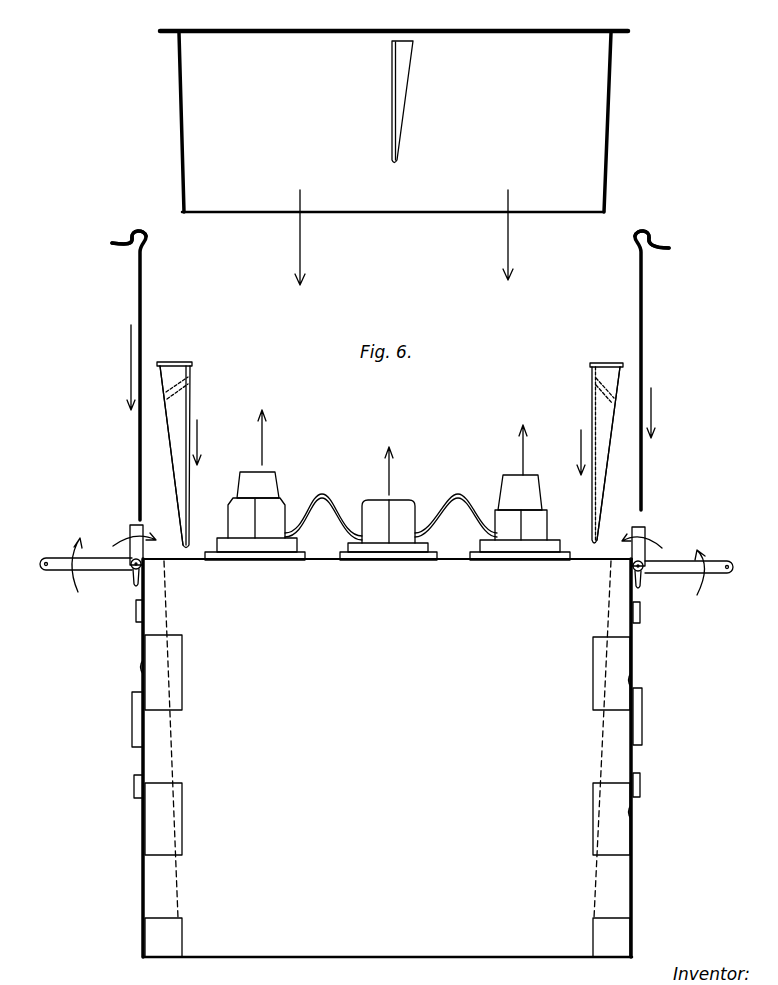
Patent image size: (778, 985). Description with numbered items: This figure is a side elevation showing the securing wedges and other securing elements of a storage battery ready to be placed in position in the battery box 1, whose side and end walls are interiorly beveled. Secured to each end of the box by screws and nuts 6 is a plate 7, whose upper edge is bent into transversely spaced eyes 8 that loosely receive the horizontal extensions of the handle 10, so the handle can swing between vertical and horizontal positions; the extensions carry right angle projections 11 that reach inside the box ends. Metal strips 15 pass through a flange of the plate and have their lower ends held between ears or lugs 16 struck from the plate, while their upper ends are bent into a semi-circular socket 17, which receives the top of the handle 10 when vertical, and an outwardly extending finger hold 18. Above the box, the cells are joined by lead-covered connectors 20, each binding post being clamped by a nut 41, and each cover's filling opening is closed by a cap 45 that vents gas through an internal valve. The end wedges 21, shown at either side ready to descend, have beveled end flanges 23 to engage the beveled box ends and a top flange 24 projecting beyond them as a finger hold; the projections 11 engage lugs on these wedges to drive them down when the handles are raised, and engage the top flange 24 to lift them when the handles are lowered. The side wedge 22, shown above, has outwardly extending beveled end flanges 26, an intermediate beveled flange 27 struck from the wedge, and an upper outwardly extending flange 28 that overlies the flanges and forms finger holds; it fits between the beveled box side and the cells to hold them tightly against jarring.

The battery box 1 is at (387, 758).
The nuts 6 is at (135, 613).
The plate 7 is at (141, 667).
The eyes 8 is at (129, 573).
The handle 10 is at (101, 571).
The right angle projections 11 is at (130, 528).
The metal strips 15 is at (144, 320).
The ears or lugs 16 is at (133, 727).
The semi-circular socket 17 is at (148, 242).
The finger hold 18 is at (114, 240).
The connectors 20 is at (322, 497).
The end wedges 21 is at (191, 440).
The side wedge 22 is at (385, 127).
The beveled end flanges 23 is at (176, 454).
The top flange 24 is at (181, 362).
The beveled end flanges 26 is at (178, 144).
The intermediate beveled flange 27 is at (389, 122).
The outwardly extending flange 28 is at (472, 35).
The nuts 41 is at (267, 492).
The cap 45 is at (398, 516).